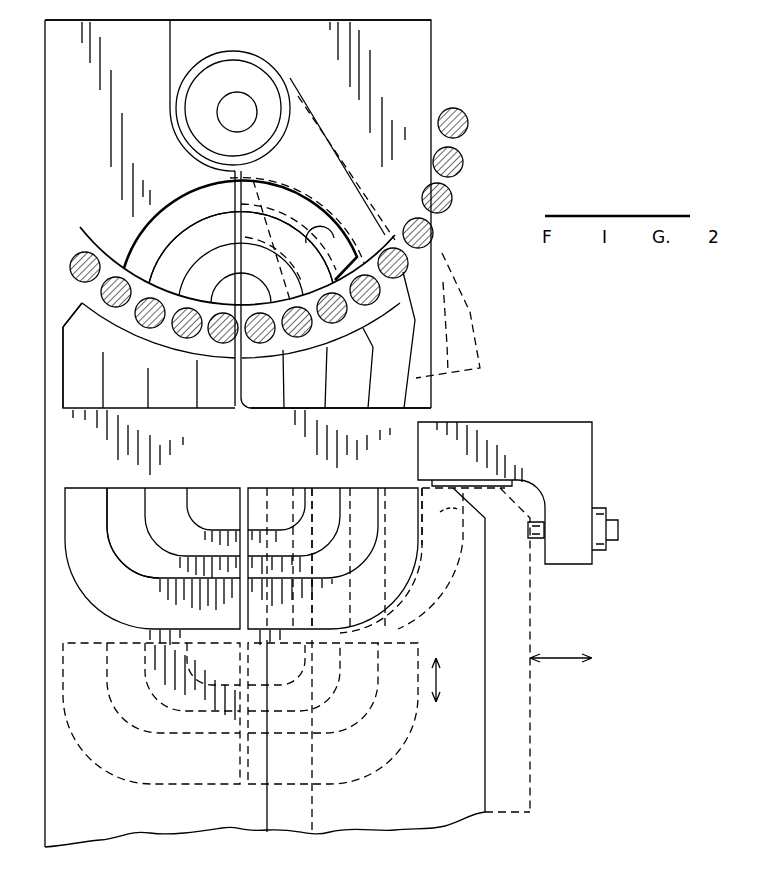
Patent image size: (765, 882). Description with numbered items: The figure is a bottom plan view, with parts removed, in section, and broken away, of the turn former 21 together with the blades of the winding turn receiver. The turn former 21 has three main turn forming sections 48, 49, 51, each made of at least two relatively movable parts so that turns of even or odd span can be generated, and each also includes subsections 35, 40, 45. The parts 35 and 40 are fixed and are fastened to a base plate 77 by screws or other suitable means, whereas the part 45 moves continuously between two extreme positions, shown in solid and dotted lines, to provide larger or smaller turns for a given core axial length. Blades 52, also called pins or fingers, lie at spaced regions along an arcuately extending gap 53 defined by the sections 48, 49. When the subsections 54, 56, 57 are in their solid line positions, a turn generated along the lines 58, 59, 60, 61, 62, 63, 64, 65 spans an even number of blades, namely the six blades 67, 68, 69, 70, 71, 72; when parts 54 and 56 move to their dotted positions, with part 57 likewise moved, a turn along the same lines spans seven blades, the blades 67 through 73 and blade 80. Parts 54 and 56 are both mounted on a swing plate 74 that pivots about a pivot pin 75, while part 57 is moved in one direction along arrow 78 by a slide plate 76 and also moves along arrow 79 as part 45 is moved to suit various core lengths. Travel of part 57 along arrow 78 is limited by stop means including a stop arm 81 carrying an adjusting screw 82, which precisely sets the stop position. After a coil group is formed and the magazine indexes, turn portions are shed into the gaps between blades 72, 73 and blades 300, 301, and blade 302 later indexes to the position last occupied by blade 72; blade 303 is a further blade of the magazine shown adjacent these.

The turn former 21 is at (431, 101).
The turn former part 35 is at (194, 266).
The turn former part 40 is at (142, 393).
The turn former part 45 is at (65, 526).
The turn former section 48 is at (132, 262).
The turn former section 49 is at (63, 365).
The turn former section 51 is at (210, 660).
The blades 52 is at (71, 262).
The arcuately extending gap 53 is at (222, 266).
The turn former subsection 54 is at (298, 196).
The turn former subsection 56 is at (449, 346).
The turn former subsection 57 is at (412, 596).
The turn forming line 58 is at (155, 272).
The turn forming line 59 is at (325, 248).
The turn forming line 60 is at (376, 344).
The turn forming line 61 is at (386, 408).
The turn forming line 62 is at (388, 505).
The turn forming line 63 is at (312, 590).
The turn forming line 64 is at (114, 551).
The turn forming line 65 is at (103, 340).
The blade 67 is at (140, 325).
The blade 68 is at (184, 338).
The blade 69 is at (223, 343).
The blade 70 is at (260, 343).
The blade 71 is at (296, 337).
The blade 72 is at (337, 322).
The blade 73 is at (372, 304).
The swing plate 74 is at (318, 132).
The pivot pin 75 is at (236, 108).
The slide plate 76 is at (435, 816).
The base plate 77 is at (431, 46).
The direction arrow 78 is at (561, 669).
The direction arrow 79 is at (448, 680).
The blade 80 is at (390, 248).
The stop arm 81 is at (594, 442).
The adjusting screw 82 is at (536, 540).
The blade 300 is at (436, 233).
The blade 301 is at (455, 200).
The blade 302 is at (466, 163).
The roller 303 is at (471, 123).